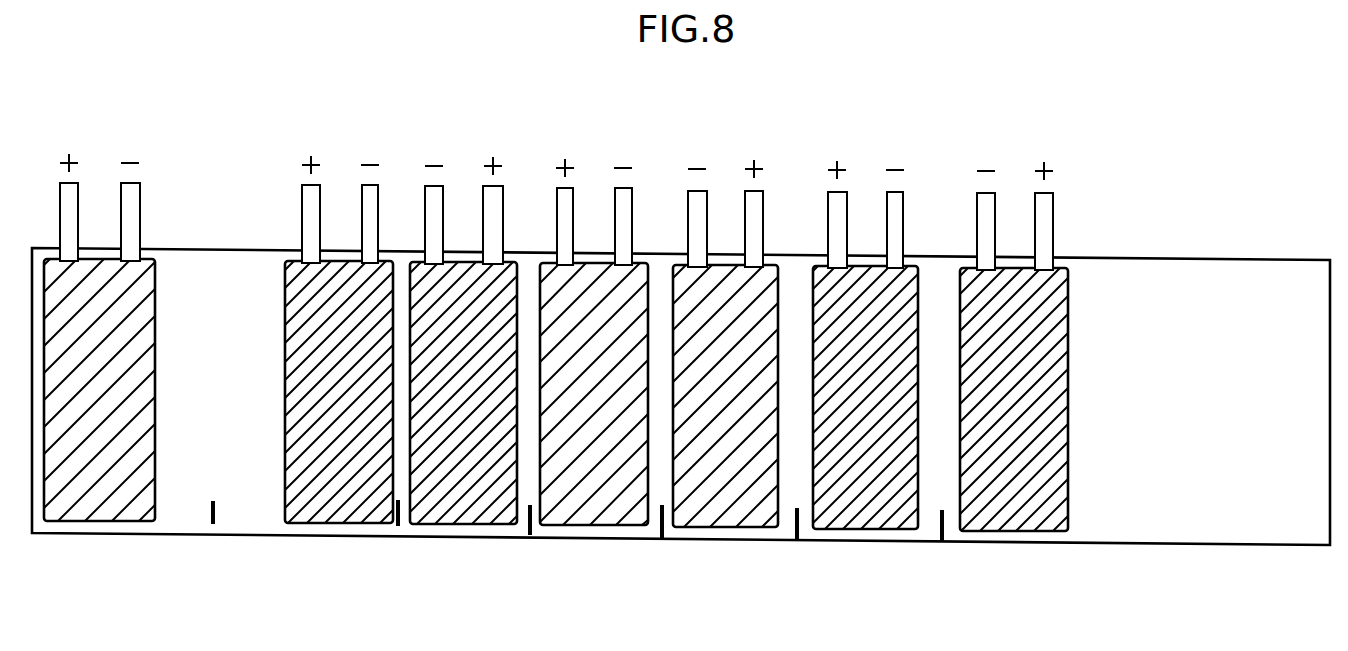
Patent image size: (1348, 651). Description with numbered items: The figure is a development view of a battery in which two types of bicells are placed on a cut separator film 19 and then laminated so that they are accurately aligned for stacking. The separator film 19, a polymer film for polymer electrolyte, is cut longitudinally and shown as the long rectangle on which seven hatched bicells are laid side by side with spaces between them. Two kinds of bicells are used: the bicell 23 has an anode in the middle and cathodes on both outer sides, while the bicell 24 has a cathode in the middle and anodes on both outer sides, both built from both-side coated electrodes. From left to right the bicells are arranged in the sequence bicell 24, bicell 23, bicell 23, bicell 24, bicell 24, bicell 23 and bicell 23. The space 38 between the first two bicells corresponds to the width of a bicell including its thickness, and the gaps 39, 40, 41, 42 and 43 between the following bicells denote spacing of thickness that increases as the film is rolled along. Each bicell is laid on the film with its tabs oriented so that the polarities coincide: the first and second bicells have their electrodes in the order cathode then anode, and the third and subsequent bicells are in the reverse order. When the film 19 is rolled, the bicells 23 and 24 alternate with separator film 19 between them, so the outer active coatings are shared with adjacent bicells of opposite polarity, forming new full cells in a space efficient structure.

The separator film 19 is at (1195, 510).
The bicell 23 is at (345, 505).
The bicell 24 is at (92, 500).
The space 38 is at (213, 524).
The gap 39 is at (398, 526).
The gap 40 is at (530, 535).
The gap 41 is at (662, 538).
The gap 42 is at (797, 540).
The gap 43 is at (942, 541).